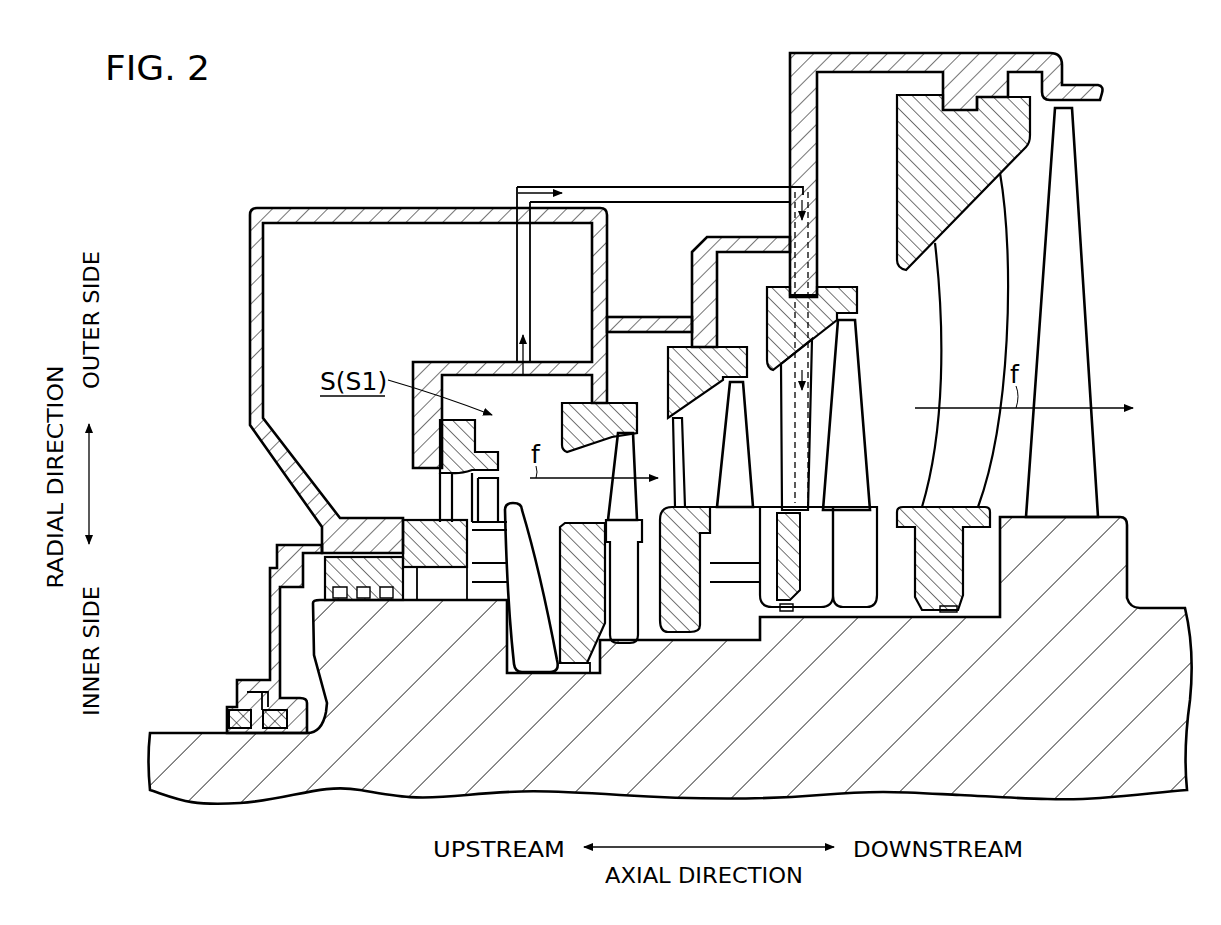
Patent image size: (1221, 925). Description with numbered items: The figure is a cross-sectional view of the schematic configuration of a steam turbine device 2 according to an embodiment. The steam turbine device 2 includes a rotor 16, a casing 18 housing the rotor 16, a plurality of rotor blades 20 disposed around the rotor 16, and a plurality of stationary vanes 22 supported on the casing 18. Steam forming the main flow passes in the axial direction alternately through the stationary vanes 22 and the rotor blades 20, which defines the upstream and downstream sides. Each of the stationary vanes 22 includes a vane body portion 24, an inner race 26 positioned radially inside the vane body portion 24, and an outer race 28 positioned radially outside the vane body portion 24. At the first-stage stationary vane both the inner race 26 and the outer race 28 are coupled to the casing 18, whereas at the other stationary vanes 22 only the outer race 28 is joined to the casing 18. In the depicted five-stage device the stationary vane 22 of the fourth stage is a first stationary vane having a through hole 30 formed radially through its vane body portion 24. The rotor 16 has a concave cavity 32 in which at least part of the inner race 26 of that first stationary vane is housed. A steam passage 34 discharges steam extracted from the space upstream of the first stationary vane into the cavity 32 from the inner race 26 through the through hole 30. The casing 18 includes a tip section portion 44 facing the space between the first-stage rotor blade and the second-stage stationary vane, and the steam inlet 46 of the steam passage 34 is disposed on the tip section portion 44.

The steam turbine device 2 is at (698, 66).
The rotor 16 is at (1132, 565).
The casing 18 is at (425, 208).
The rotor blades 20 is at (640, 493).
The stationary vanes 22 is at (440, 492).
The vane body portion 24 is at (672, 428).
The inner race 26 is at (685, 612).
The outer race 28 is at (745, 346).
The through hole 30 is at (820, 480).
The cavity 32 is at (773, 669).
The steam passage 34 is at (668, 187).
The tip section portion 44 is at (468, 378).
The steam inlet 46 is at (540, 378).